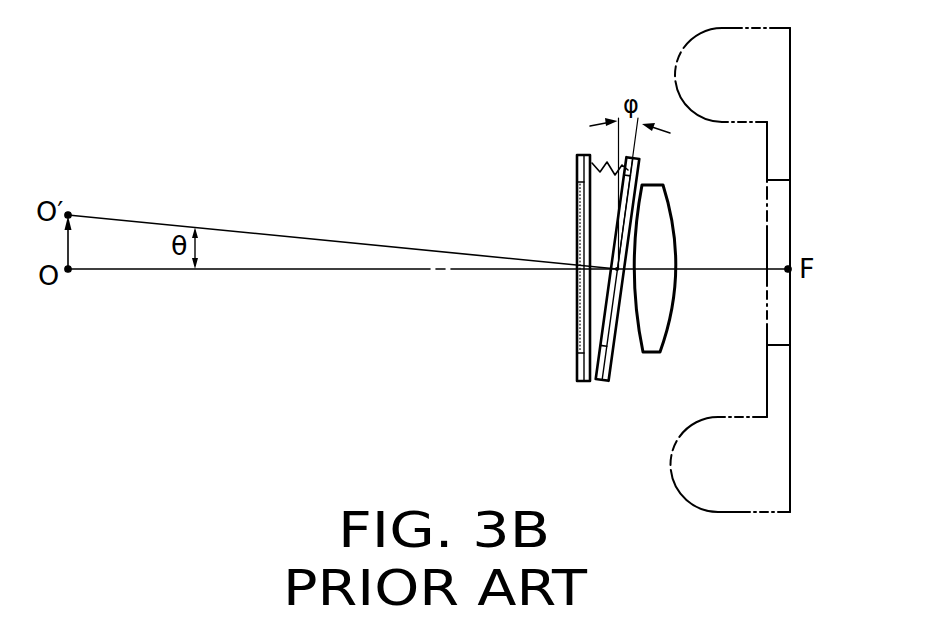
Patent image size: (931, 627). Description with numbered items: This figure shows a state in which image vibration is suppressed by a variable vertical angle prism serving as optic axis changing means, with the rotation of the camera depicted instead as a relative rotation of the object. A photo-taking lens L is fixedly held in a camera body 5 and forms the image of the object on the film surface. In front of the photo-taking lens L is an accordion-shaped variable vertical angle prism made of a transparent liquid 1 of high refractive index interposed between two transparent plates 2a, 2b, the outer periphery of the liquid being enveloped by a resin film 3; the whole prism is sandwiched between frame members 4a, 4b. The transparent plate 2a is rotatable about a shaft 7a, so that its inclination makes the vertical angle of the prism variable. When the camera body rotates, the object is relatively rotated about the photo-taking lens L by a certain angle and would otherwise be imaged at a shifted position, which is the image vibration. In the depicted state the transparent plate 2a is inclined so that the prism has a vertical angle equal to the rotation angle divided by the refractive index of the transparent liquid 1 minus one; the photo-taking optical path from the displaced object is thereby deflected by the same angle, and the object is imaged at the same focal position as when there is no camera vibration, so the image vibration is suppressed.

The transparent liquid 1 is at (600, 213).
The transparent plate 2a is at (612, 351).
The transparent plate 2b is at (579, 242).
The resin film 3 is at (592, 163).
The frame member 4a is at (641, 169).
The frame member 4b is at (577, 370).
The camera body 5 is at (780, 92).
The shaft 7a is at (609, 275).
The photo-taking lens L is at (667, 223).